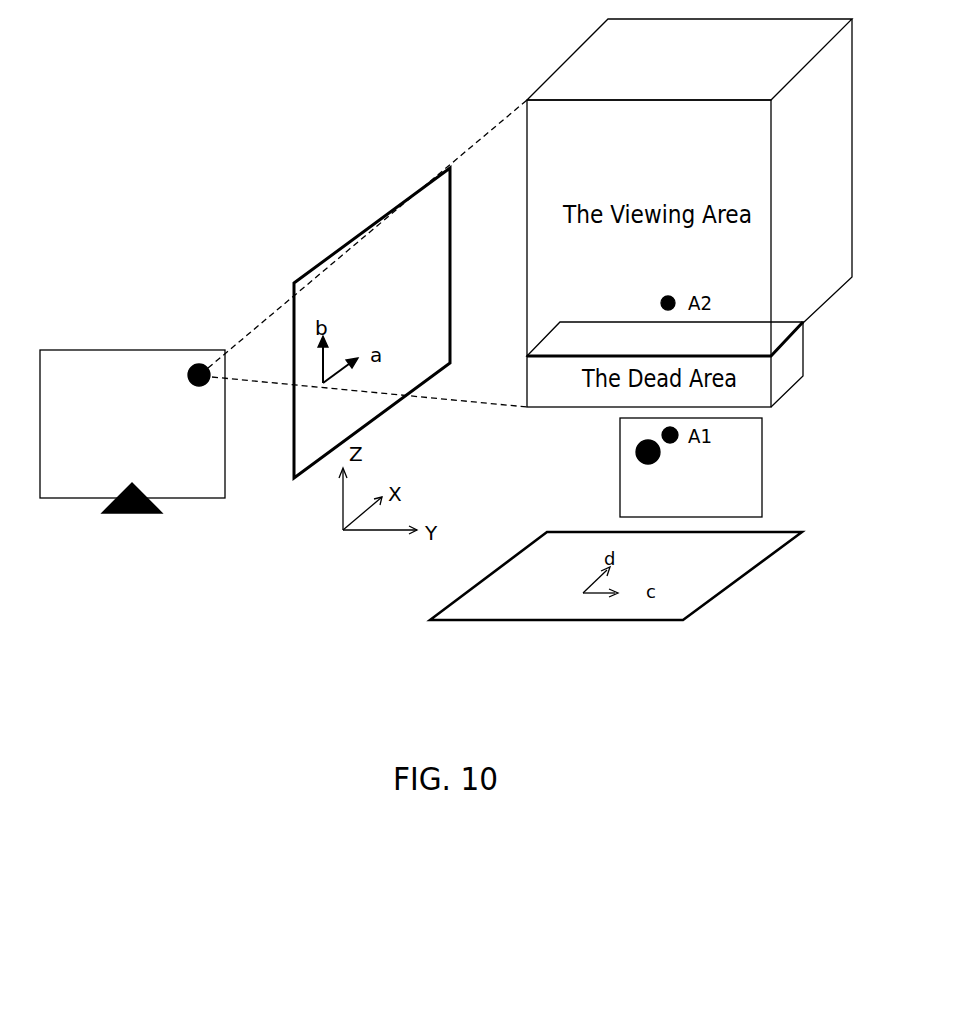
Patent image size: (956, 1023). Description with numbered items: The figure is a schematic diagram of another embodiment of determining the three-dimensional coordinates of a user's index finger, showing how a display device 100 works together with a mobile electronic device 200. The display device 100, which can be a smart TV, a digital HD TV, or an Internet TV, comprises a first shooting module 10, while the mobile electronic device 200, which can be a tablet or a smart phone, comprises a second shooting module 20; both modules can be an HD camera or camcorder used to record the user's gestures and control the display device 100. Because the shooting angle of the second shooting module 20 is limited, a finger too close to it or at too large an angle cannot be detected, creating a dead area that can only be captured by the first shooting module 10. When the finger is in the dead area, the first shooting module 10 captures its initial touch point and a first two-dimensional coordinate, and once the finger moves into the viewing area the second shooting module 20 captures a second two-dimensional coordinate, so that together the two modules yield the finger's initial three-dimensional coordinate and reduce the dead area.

The display device 100 is at (128, 350).
The first shooting module 10 is at (208, 385).
The second shooting module 20 is at (637, 450).
The mobile electronic device 200 is at (620, 480).